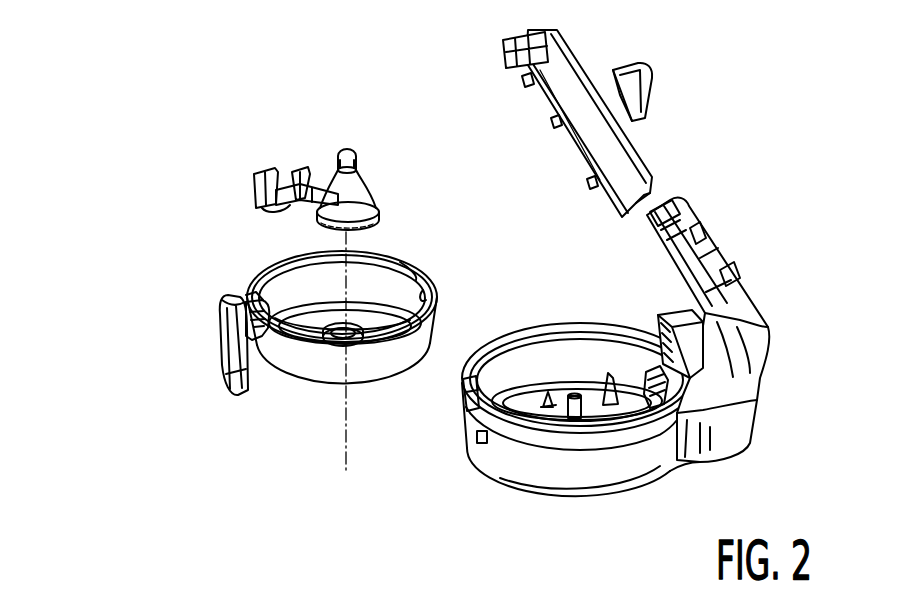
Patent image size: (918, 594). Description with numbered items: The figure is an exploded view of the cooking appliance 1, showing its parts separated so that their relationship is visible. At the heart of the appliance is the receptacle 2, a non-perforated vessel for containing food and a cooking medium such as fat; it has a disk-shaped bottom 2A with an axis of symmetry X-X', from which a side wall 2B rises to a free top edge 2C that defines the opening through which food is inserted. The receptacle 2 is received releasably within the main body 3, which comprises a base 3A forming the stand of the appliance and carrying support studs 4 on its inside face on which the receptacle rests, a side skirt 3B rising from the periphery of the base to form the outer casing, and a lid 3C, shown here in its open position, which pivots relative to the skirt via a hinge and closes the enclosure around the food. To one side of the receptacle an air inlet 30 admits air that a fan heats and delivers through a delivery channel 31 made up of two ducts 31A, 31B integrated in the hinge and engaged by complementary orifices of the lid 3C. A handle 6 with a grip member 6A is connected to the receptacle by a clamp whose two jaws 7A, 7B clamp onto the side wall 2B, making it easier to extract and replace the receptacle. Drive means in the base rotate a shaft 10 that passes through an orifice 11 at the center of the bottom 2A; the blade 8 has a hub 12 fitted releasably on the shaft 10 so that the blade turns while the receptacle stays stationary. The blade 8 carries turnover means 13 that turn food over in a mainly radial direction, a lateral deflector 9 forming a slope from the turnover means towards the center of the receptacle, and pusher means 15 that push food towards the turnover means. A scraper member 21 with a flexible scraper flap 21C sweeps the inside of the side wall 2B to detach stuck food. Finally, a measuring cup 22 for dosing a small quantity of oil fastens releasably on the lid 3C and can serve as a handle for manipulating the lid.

The appliance 1 is at (634, 281).
The receptacle 2 is at (354, 348).
The bottom 2A is at (300, 320).
The side wall 2B is at (424, 291).
The free top edge 2C is at (415, 275).
The main body 3 is at (579, 438).
The base 3A is at (581, 498).
The side skirt 3B is at (530, 458).
The lid 3C is at (568, 78).
The support studs 4 is at (545, 398).
The handle 6 is at (206, 347).
The grip member 6A is at (222, 377).
The jaw 7A is at (252, 340).
The jaw 7B is at (248, 292).
The blade 8 is at (385, 169).
The lateral deflector 9 is at (303, 175).
The shaft 10 is at (573, 396).
The orifice 11 is at (330, 330).
The hub 12 is at (363, 178).
The turnover means 13 is at (322, 172).
The pusher means 15 is at (389, 203).
The scraper member 21 is at (262, 176).
The scraper flap 21C is at (253, 188).
The measuring cup 22 is at (643, 88).
The air inlet 30 is at (655, 366).
The delivery channel 31 is at (726, 296).
The duct 31A is at (678, 203).
The duct 31B is at (725, 256).